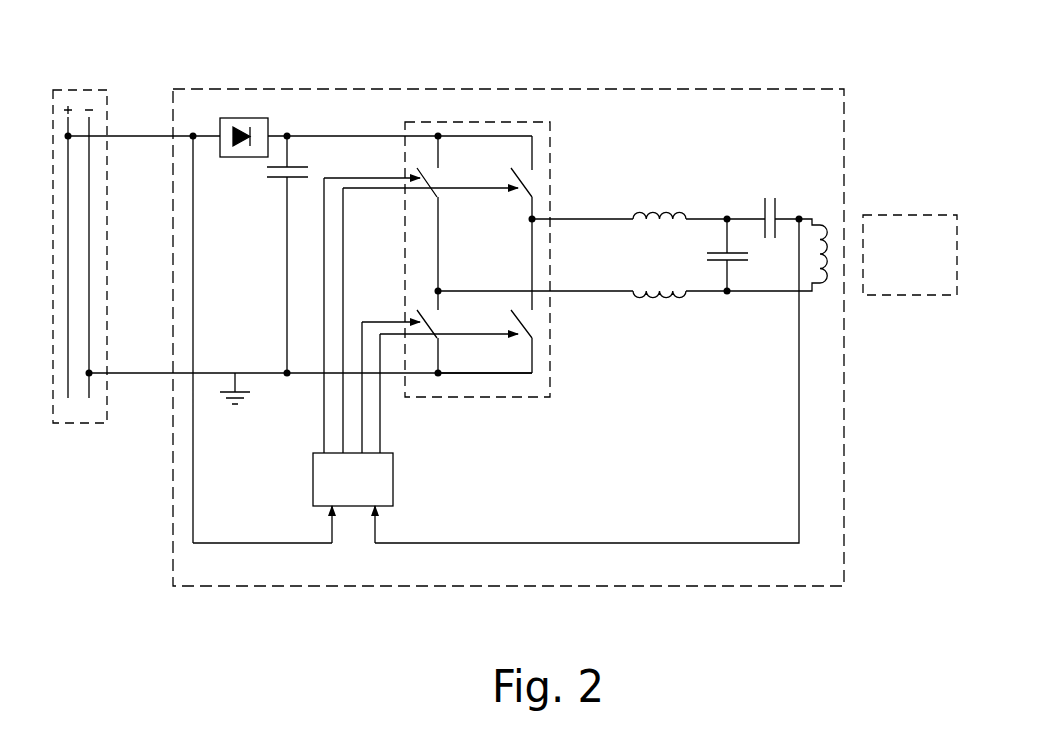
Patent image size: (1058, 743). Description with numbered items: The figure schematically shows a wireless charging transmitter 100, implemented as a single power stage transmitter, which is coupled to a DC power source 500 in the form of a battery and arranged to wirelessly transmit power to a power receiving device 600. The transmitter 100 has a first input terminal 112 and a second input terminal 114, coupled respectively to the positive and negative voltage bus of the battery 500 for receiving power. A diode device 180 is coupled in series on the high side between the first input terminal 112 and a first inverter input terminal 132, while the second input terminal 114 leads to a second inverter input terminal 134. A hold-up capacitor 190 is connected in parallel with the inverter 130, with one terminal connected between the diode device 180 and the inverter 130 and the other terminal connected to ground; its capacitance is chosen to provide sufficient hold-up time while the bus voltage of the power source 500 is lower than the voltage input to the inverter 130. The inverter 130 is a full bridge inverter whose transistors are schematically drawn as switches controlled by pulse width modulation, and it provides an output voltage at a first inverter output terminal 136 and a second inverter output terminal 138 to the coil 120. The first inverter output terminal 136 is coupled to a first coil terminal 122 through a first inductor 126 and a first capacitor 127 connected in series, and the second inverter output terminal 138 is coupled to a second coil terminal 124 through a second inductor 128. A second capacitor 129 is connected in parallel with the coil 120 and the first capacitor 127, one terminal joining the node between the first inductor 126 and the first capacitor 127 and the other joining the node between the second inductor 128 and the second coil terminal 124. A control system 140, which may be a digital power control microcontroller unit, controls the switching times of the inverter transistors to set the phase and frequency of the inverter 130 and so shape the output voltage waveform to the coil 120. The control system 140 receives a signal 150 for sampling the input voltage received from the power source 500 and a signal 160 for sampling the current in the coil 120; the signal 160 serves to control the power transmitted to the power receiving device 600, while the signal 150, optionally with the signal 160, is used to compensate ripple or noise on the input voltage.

The wireless charging transmitter 100 is at (848, 470).
The DC power source 500 is at (93, 427).
The first input terminal 112 is at (165, 140).
The second input terminal 114 is at (168, 378).
The diode device 180 is at (237, 116).
The hold-up capacitor 190 is at (265, 178).
The first inverter input terminal 132 is at (400, 130).
The inverter 130 is at (555, 377).
The second inverter input terminal 134 is at (404, 377).
The first inverter output terminal 136 is at (557, 217).
The second inverter output terminal 138 is at (557, 298).
The first inductor 126 is at (670, 195).
The second inductor 128 is at (693, 317).
The second capacitor 129 is at (715, 245).
The first capacitor 127 is at (780, 192).
The first coil terminal 122 is at (815, 217).
The coil 120 is at (835, 240).
The second coil terminal 124 is at (818, 285).
The power receiving device 600 is at (915, 298).
The control system 140 is at (397, 472).
The signal for sampling the input voltage 150 is at (322, 547).
The signal for sampling the coil current 160 is at (660, 547).